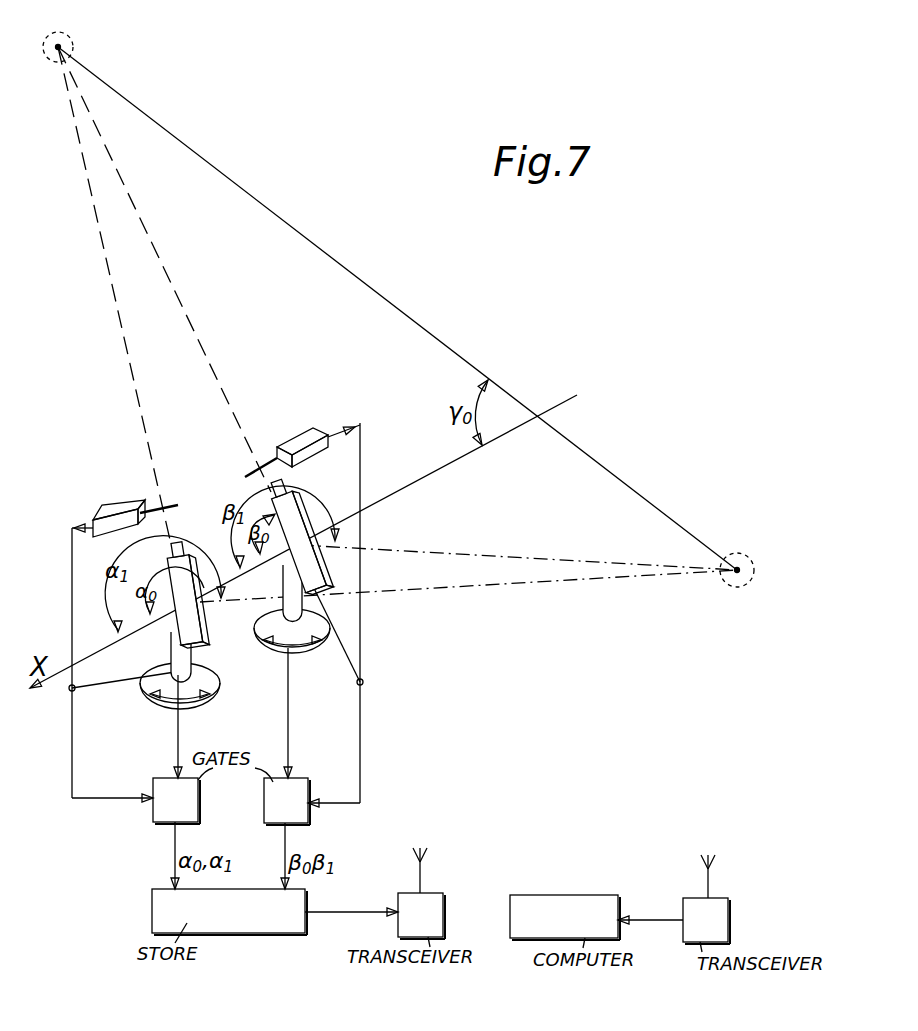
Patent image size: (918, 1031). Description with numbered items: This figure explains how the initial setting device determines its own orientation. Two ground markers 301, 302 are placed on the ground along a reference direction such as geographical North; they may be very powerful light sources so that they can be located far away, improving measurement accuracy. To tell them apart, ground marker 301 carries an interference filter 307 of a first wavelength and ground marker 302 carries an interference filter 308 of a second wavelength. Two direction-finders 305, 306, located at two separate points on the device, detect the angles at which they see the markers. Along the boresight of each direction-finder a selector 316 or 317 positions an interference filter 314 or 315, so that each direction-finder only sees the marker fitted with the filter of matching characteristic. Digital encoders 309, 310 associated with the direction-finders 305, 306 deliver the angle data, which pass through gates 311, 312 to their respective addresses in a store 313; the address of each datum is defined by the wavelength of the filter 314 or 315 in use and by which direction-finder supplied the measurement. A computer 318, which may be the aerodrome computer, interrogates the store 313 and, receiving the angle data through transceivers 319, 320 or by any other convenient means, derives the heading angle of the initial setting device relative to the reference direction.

The ground marker 301 is at (67, 40).
The ground marker 302 is at (731, 556).
The direction-finder 305 is at (193, 614).
The direction-finder 306 is at (322, 580).
The interference filter 307 is at (73, 44).
The interference filter 308 is at (733, 584).
The digital encoder 309 is at (190, 682).
The digital encoder 310 is at (295, 612).
The gate 311 is at (182, 801).
The gate 312 is at (293, 801).
The store 313 is at (229, 912).
The interference filter 314 is at (163, 503).
The interference filter 315 is at (250, 470).
The selector 316 is at (105, 507).
The selector 317 is at (303, 444).
The computer 318 is at (565, 917).
The transceiver 319 is at (427, 893).
The transceiver 320 is at (711, 899).